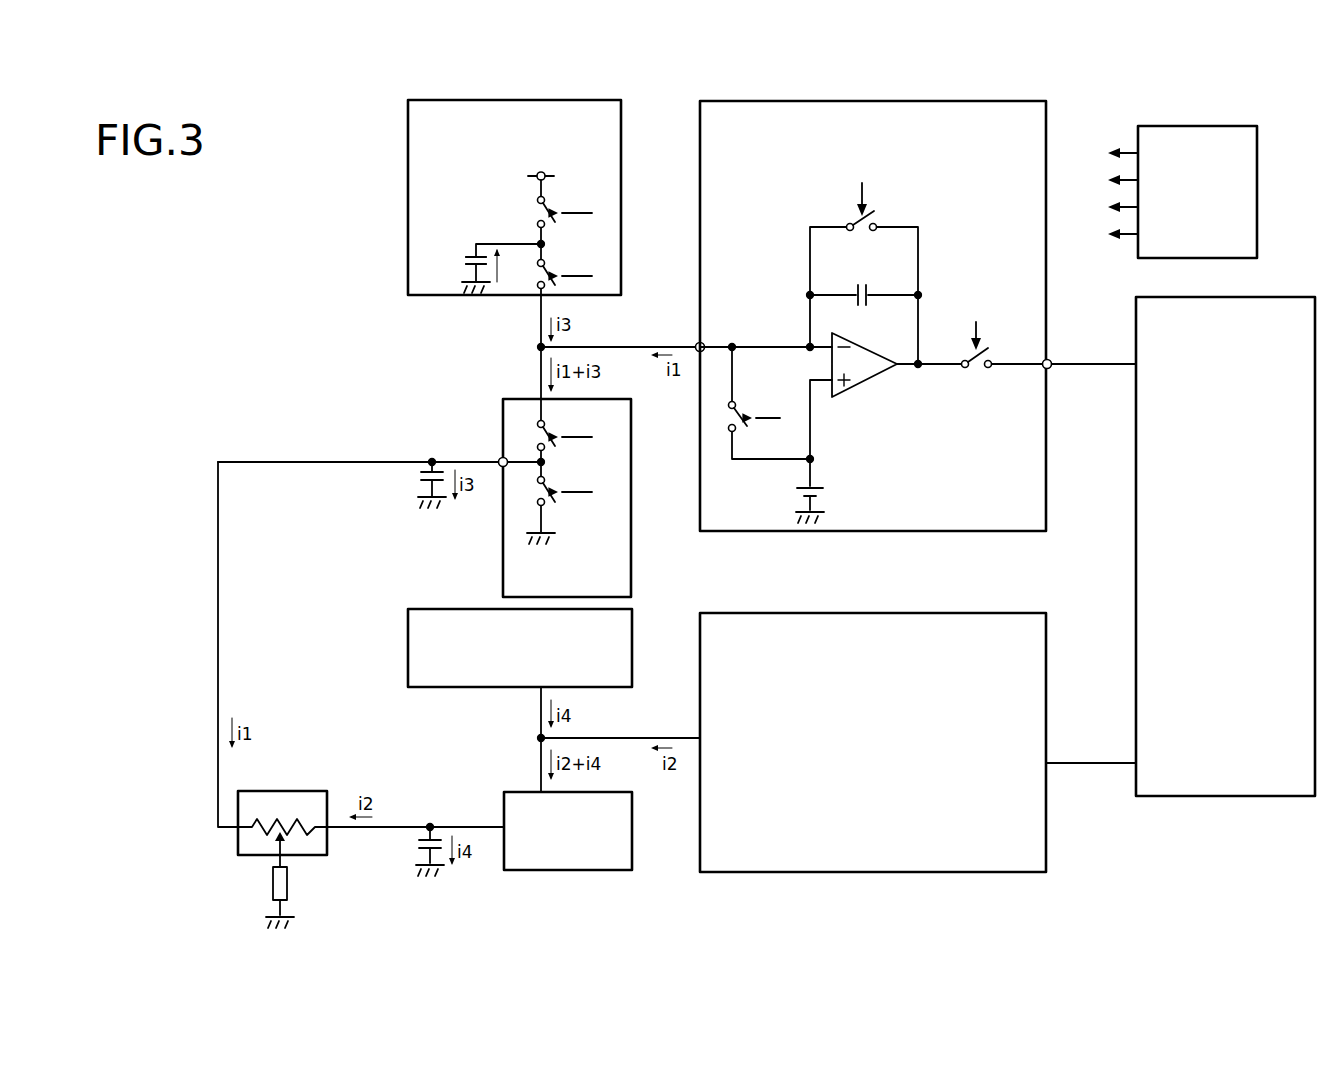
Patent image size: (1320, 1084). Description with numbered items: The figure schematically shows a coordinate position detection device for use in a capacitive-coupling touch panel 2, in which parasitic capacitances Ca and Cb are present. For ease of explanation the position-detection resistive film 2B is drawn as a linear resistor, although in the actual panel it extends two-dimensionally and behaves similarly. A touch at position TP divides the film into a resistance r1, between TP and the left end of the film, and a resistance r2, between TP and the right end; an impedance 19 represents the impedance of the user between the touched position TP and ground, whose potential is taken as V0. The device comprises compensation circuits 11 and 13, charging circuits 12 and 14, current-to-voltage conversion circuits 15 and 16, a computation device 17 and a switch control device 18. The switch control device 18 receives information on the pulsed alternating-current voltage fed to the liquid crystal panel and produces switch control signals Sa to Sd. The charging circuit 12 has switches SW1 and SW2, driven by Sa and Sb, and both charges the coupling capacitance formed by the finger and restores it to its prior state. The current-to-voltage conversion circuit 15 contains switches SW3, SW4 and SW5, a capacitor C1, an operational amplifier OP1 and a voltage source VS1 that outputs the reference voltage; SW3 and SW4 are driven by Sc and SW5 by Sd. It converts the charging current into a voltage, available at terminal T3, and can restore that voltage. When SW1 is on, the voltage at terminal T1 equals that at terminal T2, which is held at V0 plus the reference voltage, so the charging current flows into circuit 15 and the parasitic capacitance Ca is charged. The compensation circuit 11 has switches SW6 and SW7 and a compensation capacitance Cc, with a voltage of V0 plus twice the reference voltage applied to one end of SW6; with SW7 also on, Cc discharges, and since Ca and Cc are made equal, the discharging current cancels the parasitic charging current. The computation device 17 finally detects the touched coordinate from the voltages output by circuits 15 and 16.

The capacitive-coupling touch panel 2 is at (282, 802).
The position-detection resistive film 2B is at (282, 792).
The compensation circuit 11 is at (488, 249).
The charging circuit 12 is at (539, 495).
The compensation circuit 13 is at (408, 643).
The charging circuit 14 is at (504, 816).
The current-to-voltage conversion circuit 15 is at (918, 315).
The current-to-voltage conversion circuit 16 is at (1046, 658).
The computation device 17 is at (1136, 337).
The switch control device 18 is at (1257, 141).
The impedance 19 is at (288, 884).
The position of touched area TP is at (274, 836).
The terminal T1 is at (502, 460).
The terminal T2 is at (696, 345).
The terminal T3 is at (1050, 370).
The switch SW1 is at (548, 430).
The switch SW2 is at (548, 486).
The switch SW3 is at (740, 410).
The switch SW4 is at (878, 221).
The switch SW5 is at (992, 364).
The switch SW6 is at (548, 206).
The switch SW7 is at (548, 268).
The parasitic capacitance Ca is at (428, 484).
The parasitic capacitance Cb is at (424, 844).
The compensation capacitance Cc is at (464, 264).
The capacitor C1 is at (862, 286).
The operational amplifier OP1 is at (866, 380).
The voltage source VS1 is at (824, 496).
The resistance r1 is at (259, 812).
The resistance r2 is at (288, 819).